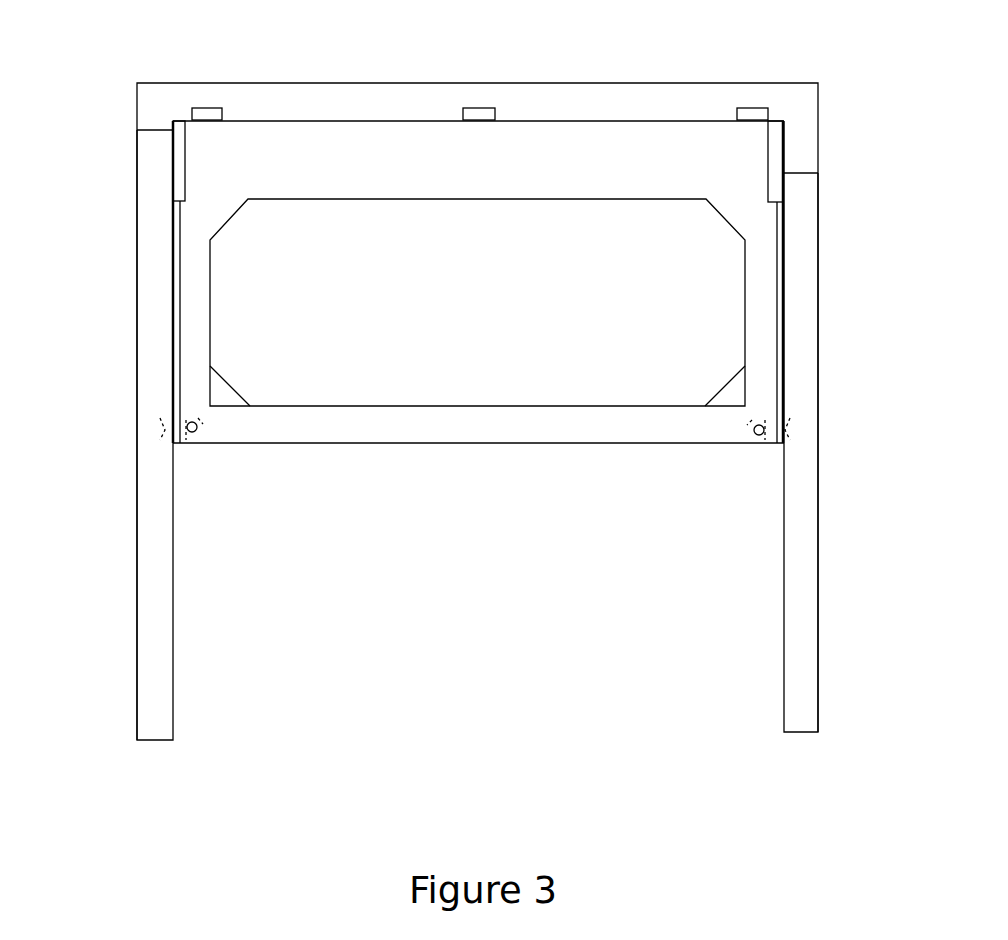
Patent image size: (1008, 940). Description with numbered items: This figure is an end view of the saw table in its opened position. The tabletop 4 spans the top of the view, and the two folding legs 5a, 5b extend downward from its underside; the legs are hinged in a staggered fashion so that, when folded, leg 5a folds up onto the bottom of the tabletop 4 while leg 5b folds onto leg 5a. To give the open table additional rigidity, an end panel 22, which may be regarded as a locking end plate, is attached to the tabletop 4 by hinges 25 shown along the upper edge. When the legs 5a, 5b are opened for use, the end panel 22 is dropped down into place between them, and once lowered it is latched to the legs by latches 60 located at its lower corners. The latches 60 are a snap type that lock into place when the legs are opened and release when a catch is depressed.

The tabletop 4 is at (196, 79).
The leg 5a is at (137, 562).
The leg 5b is at (818, 558).
The end panel 22 is at (442, 368).
The hinge 25 is at (222, 115).
The latch 60 is at (197, 437).